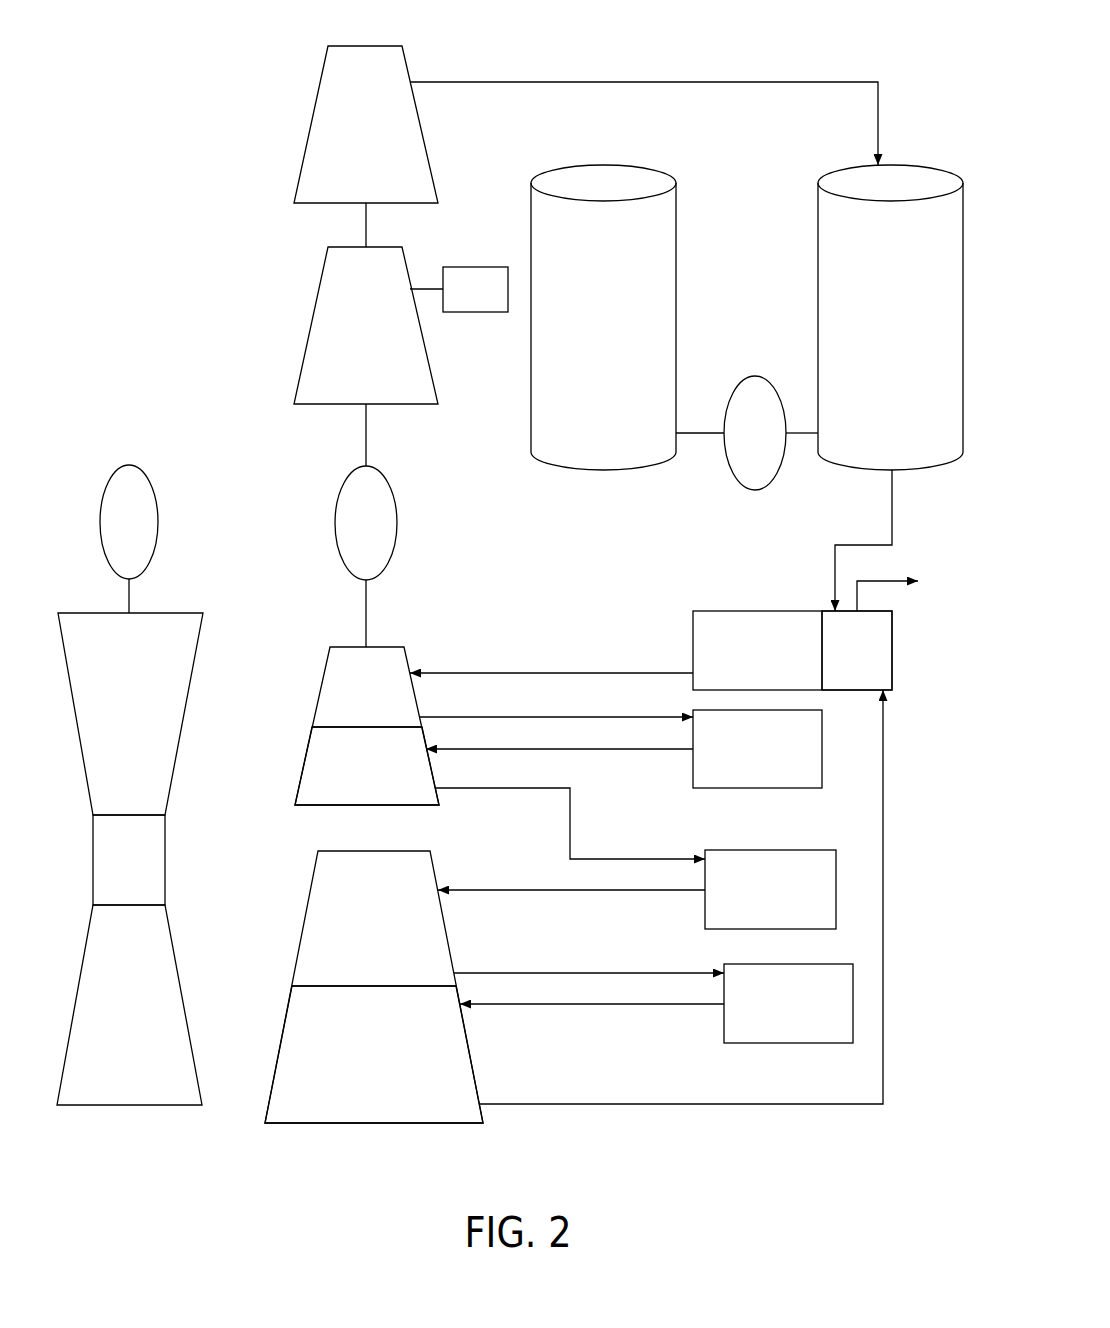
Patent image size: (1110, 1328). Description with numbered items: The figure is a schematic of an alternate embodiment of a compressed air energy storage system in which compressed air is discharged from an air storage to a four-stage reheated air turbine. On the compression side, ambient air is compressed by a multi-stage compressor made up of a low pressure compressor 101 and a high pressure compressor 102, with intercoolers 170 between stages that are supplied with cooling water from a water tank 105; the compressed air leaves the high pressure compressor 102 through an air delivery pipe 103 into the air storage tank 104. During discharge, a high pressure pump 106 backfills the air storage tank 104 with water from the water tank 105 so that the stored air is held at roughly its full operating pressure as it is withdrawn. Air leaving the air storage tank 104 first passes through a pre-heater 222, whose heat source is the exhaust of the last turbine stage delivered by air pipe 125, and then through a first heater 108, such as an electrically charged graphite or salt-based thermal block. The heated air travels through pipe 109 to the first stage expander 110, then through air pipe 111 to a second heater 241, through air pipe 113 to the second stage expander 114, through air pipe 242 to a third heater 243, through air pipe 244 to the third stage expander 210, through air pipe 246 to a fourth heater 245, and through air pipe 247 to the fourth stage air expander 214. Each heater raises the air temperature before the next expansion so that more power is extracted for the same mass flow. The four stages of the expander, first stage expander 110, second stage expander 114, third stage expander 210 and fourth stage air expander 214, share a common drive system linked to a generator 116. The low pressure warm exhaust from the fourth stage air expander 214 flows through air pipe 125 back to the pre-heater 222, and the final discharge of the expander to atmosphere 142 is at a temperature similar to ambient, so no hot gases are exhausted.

The low pressure compressor 101 is at (366, 325).
The high pressure compressor 102 is at (366, 124).
The air delivery pipe 103 is at (677, 80).
The air storage tank 104 is at (890, 317).
The water tank 105 is at (603, 317).
The high pressure pump 106 is at (747, 433).
The first heater 108 is at (792, 650).
The pipe 109 is at (551, 657).
The first stage expander 110 is at (367, 726).
The air pipe 111 is at (556, 702).
The air pipe 113 is at (559, 735).
The second stage expander 114 is at (367, 766).
The generator 116 is at (366, 523).
The air pipe 125 is at (681, 898).
The atmosphere 142 is at (919, 587).
The intercooler 170 is at (459, 289).
The third stage expander 210 is at (374, 987).
The fourth stage air expander 214 is at (374, 1054).
The pre-heater 222 is at (857, 650).
The second heater 241 is at (757, 749).
The air pipe 242 is at (570, 808).
The third heater 243 is at (770, 889).
The air pipe 244 is at (571, 875).
The fourth heater 245 is at (788, 1003).
The air pipe 246 is at (589, 958).
The air pipe 247 is at (592, 989).